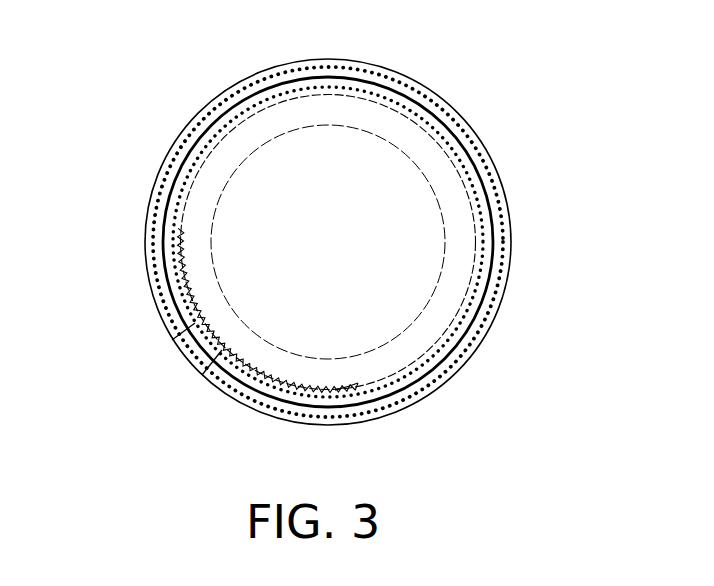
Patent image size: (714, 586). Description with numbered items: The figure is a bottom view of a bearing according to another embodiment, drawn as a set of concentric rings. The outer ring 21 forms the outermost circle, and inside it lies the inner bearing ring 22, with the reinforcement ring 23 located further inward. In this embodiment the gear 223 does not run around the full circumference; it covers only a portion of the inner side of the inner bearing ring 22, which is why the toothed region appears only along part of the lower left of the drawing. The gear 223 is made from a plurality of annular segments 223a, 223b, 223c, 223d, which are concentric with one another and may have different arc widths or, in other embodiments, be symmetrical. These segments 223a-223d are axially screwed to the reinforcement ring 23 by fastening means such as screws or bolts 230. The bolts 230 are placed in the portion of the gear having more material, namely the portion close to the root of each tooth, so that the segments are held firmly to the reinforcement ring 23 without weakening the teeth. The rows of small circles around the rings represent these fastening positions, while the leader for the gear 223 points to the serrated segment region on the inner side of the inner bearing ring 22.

The outer ring 21 is at (208, 112).
The inner bearing ring 22 is at (253, 102).
The reinforcement ring 23 is at (362, 115).
The gear 223 is at (243, 337).
The annular segment 223a is at (335, 390).
The annular segment 223b is at (245, 373).
The annular segment 223c is at (172, 340).
The annular segment 223d is at (183, 241).
The bolts 230 is at (202, 375).